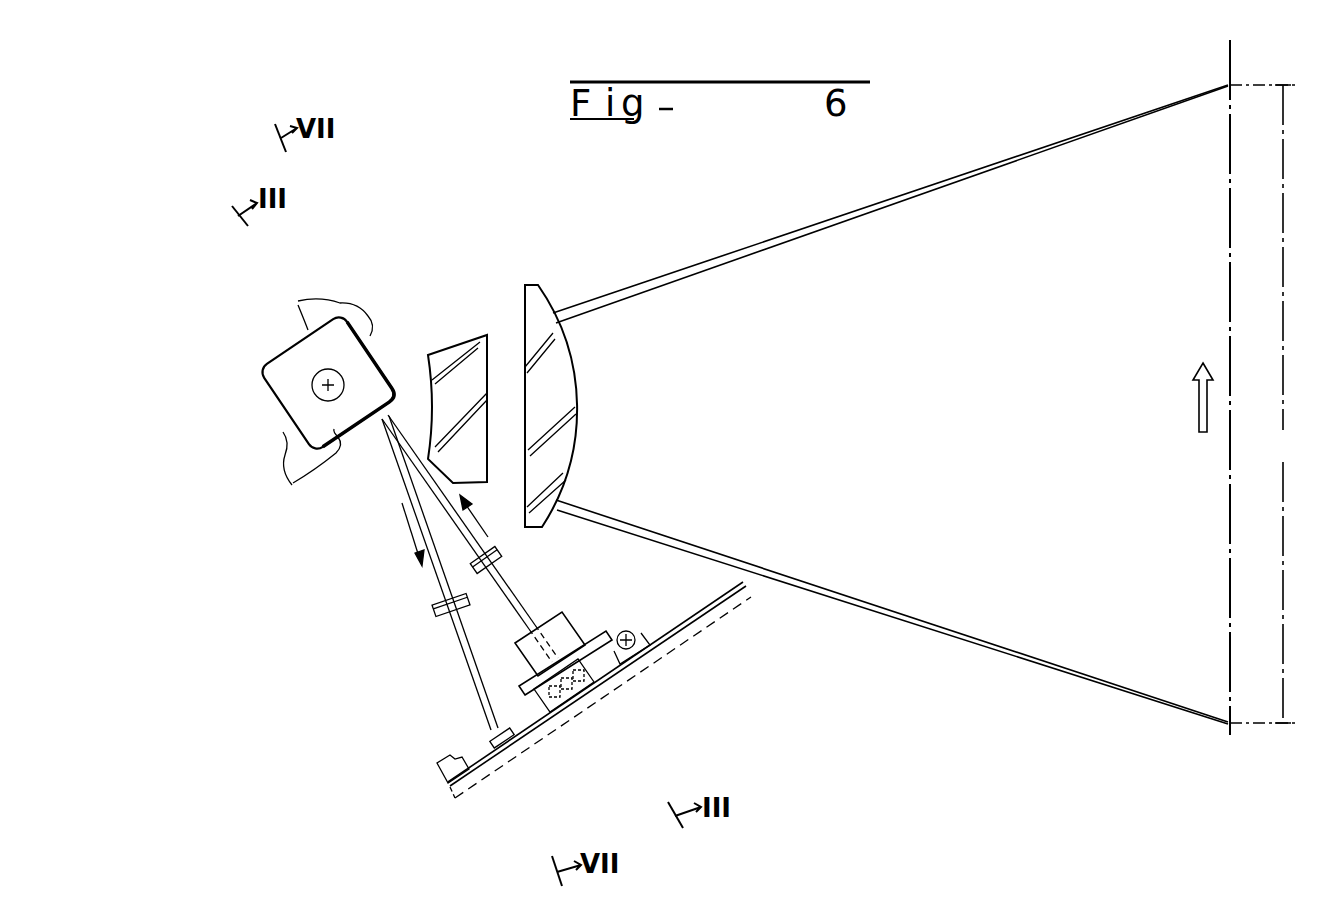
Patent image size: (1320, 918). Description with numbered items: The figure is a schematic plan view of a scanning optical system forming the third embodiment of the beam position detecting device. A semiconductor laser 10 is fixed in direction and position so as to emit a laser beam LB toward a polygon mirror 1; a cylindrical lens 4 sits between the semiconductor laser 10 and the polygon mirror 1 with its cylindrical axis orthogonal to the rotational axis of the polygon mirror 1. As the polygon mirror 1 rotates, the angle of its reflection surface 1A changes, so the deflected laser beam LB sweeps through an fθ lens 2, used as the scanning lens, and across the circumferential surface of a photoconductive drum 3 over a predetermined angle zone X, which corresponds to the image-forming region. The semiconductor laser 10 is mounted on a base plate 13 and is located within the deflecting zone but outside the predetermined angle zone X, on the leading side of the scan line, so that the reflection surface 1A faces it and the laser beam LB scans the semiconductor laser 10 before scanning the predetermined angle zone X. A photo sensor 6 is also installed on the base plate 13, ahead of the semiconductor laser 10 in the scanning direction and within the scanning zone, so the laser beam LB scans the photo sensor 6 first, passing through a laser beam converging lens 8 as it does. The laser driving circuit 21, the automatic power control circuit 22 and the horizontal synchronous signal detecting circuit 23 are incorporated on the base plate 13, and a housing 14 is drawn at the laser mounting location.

The polygon mirror 1 is at (283, 373).
The reflection surface 1A is at (314, 401).
The fθ lens 2 is at (543, 270).
The photoconductive drum 3 is at (1230, 230).
The cylindrical lens 4 is at (503, 549).
The photo sensor 6 is at (498, 741).
The laser beam converging lens 8 is at (436, 613).
The semiconductor laser 10 is at (583, 700).
The base plate 13 is at (683, 613).
The detector housing 14 is at (605, 632).
The laser driving circuit 21 is at (618, 683).
The automatic power control circuit 22 is at (566, 683).
The horizontal synchronous signal detecting circuit 23 is at (578, 675).
The laser beam LB is at (525, 598).
The predetermined angle zone X is at (1282, 404).